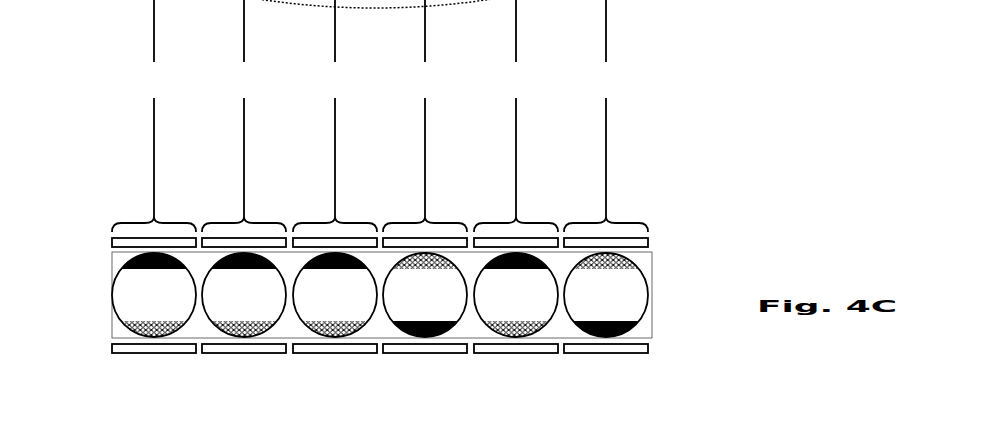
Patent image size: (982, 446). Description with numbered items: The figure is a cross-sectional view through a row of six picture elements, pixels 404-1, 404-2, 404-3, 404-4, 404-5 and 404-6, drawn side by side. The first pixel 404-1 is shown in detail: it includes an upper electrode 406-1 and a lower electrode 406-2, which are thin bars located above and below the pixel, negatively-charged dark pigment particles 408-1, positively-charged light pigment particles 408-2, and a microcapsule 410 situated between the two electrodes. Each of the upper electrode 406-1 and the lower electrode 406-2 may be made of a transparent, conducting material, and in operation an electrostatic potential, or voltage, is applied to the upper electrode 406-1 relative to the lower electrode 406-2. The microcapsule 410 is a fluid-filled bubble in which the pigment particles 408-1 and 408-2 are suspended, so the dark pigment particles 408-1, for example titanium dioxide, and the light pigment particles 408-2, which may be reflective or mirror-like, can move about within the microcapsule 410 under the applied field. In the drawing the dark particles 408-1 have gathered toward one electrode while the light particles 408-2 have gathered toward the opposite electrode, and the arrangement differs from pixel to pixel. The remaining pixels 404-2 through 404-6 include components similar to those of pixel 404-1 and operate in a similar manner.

The pixel 404-1 is at (154, 116).
The pixel 404-2 is at (244, 116).
The pixel 404-3 is at (335, 116).
The pixel 404-4 is at (425, 116).
The pixel 404-5 is at (516, 116).
The pixel 404-6 is at (606, 116).
The upper electrode 406-1 is at (113, 243).
The lower electrode 406-2 is at (130, 348).
The negatively-charged dark pigment particles 408-1 is at (165, 322).
The positively-charged light pigment particles 408-2 is at (165, 326).
The microcapsule 410 is at (113, 297).